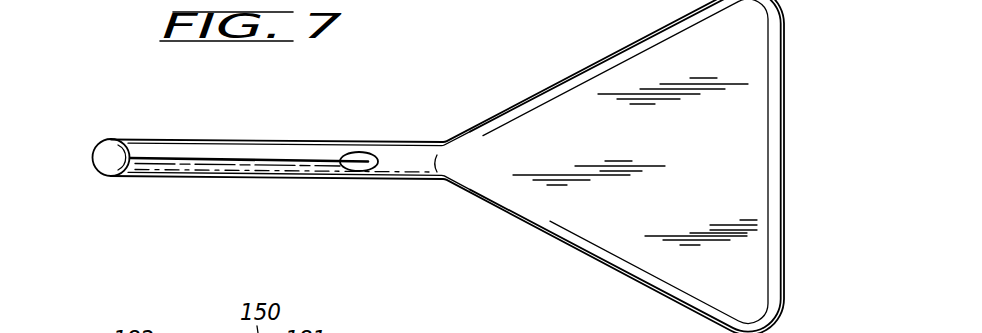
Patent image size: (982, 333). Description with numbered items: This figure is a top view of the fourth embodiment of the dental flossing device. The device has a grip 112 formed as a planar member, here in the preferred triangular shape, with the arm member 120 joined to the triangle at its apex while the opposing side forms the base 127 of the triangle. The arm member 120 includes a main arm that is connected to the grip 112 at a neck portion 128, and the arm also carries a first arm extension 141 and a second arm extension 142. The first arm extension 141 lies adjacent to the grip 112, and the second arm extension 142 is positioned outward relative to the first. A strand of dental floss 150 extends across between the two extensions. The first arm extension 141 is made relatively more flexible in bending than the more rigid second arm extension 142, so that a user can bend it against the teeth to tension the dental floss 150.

The arm member 120 is at (401, 128).
The grip 112 is at (607, 233).
The base 127 is at (785, 145).
The neck portion 128 is at (410, 180).
The first arm extension 141 is at (370, 155).
The second arm extension 142 is at (103, 146).
The strand of dental floss 150 is at (237, 157).